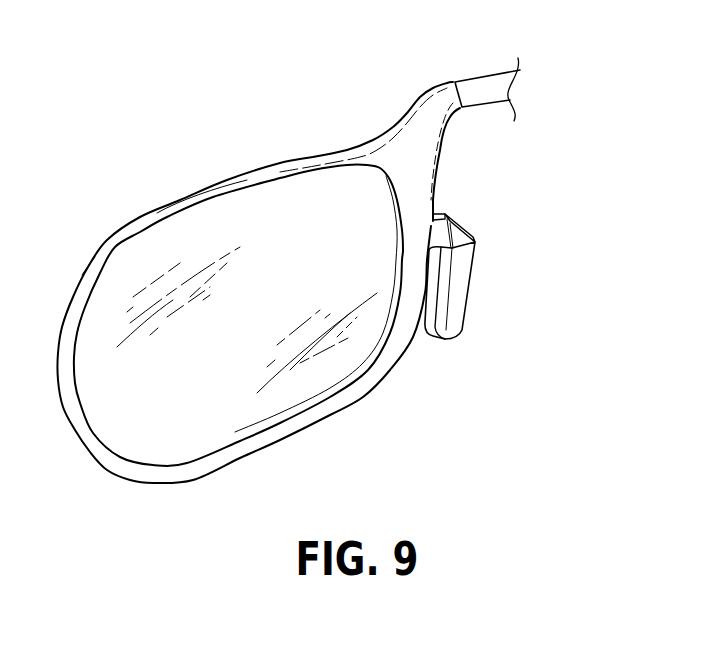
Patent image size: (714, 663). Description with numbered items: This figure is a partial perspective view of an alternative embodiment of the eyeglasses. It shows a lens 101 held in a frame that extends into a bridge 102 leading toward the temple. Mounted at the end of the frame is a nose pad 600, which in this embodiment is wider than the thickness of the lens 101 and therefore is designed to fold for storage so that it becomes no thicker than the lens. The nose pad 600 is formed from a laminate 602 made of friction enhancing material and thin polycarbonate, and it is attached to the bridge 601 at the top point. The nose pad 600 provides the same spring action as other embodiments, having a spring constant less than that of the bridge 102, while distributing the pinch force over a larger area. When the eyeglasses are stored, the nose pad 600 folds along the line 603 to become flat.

The lens 101 is at (220, 228).
The bridge 102 is at (498, 84).
The nose pad 600 is at (455, 240).
The bridge 601 is at (446, 216).
The laminate 602 is at (462, 335).
The line 603 is at (443, 263).